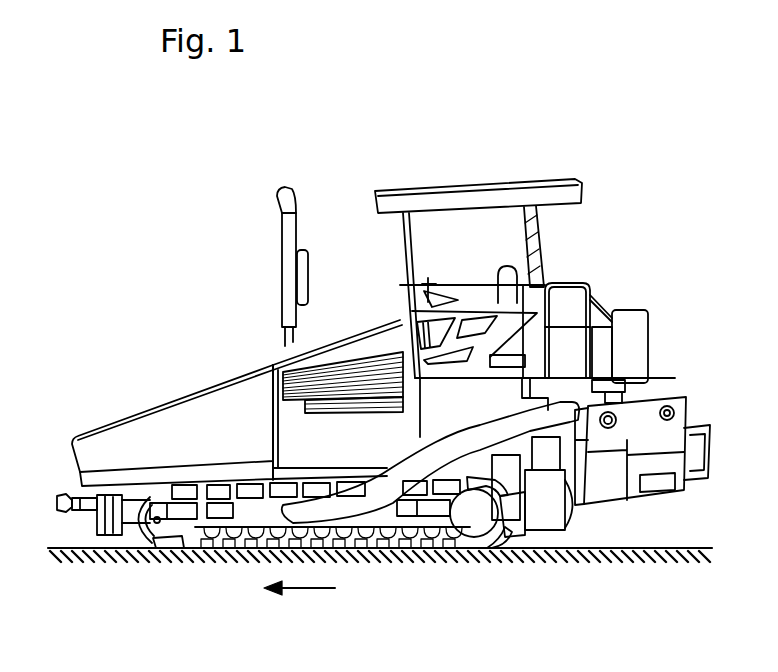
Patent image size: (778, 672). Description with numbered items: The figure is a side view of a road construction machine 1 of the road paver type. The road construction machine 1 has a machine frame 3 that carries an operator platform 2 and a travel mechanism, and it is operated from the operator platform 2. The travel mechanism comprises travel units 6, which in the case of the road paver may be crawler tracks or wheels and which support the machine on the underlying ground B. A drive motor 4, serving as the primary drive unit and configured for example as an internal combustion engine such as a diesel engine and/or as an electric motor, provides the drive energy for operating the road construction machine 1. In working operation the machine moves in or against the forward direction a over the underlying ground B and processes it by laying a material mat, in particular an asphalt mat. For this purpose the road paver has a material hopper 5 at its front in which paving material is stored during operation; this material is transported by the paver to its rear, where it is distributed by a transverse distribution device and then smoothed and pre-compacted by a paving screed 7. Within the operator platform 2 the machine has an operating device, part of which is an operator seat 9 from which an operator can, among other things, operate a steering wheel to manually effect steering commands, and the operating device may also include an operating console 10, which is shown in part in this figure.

The road construction machine 1 is at (522, 150).
The operator platform 2 is at (478, 237).
The machine frame 3 is at (283, 420).
The drive motor 4 is at (332, 385).
The material hopper 5 is at (168, 428).
The travel units 6 is at (388, 512).
The paving screed 7 is at (613, 478).
The operator seat 9 is at (510, 293).
The operating console 10 is at (440, 297).
The underlying ground B is at (103, 565).
The forward direction a is at (285, 587).